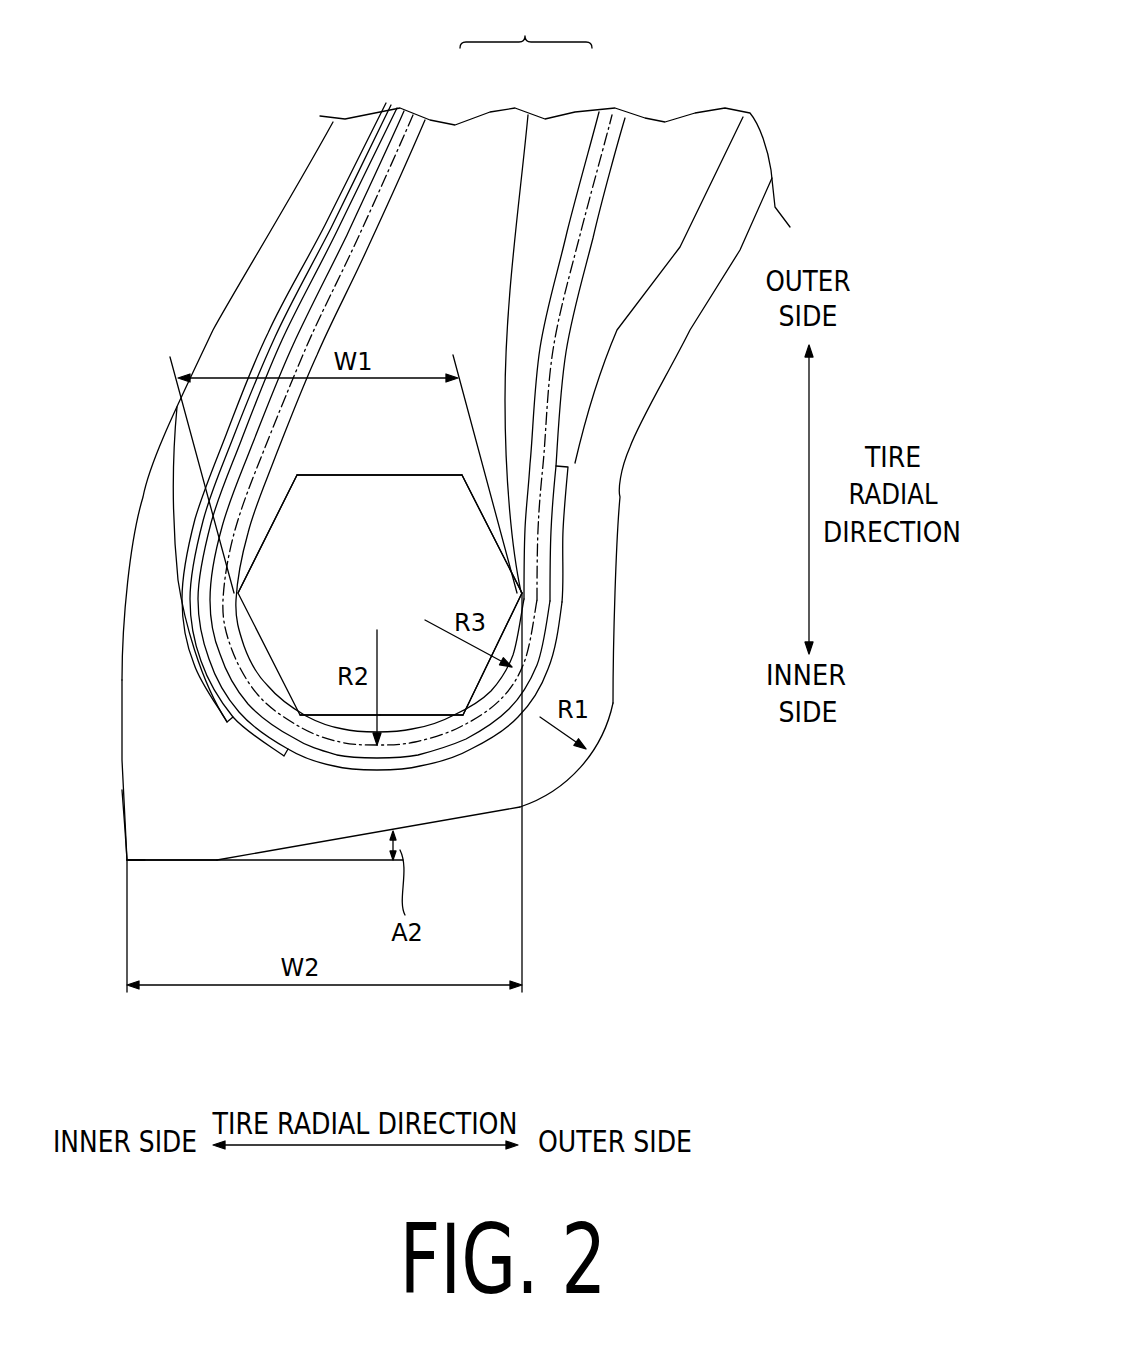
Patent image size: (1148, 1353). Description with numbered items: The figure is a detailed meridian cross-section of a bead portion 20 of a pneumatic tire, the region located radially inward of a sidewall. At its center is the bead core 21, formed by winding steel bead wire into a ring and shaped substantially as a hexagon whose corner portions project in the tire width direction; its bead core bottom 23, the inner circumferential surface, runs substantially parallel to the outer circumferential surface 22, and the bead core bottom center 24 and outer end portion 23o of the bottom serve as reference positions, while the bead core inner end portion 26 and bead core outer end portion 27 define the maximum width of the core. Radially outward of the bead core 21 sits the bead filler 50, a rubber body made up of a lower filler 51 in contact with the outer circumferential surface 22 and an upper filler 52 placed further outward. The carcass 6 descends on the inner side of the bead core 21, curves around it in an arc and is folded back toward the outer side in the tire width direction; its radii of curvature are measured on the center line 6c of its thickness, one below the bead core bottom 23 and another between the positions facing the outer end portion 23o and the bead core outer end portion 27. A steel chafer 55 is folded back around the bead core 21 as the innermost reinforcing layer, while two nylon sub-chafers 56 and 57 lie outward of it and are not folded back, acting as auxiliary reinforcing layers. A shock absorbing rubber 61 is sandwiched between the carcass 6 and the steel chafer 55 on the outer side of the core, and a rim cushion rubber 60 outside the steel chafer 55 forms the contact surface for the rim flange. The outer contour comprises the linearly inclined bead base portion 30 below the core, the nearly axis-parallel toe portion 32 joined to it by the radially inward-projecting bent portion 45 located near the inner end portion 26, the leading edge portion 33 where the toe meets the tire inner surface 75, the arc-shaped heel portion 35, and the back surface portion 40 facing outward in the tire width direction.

The carcass 6 is at (417, 112).
The center line of carcass thickness 6c is at (305, 735).
The bead portion 20 is at (105, 515).
The bead core 21 is at (347, 497).
The outer circumferential surface of the bead core 22 is at (402, 475).
The bead core bottom 23 is at (420, 718).
The outer end portion of the bead core bottom 23o is at (466, 717).
The bead core bottom center 24 is at (353, 722).
The bead core inner end portion 26 is at (236, 594).
The bead core outer end portion 27 is at (524, 594).
The bead base portion 30 is at (450, 826).
The toe portion 32 is at (168, 877).
The leading edge portion 33 is at (118, 863).
The heel portion 35 is at (565, 777).
The back surface portion 40 is at (618, 577).
The bent portion 45 is at (217, 863).
The bead filler 50 is at (526, 28).
The lower filler 51 is at (488, 140).
The upper filler 52 is at (556, 140).
The steel chafer 55 is at (570, 530).
The sub-chafer 56 is at (250, 738).
The sub-chafer 57 is at (212, 700).
The rim cushion rubber 60 is at (157, 803).
The shock absorbing rubber 61 is at (668, 133).
The tire inner surface 75 is at (120, 672).